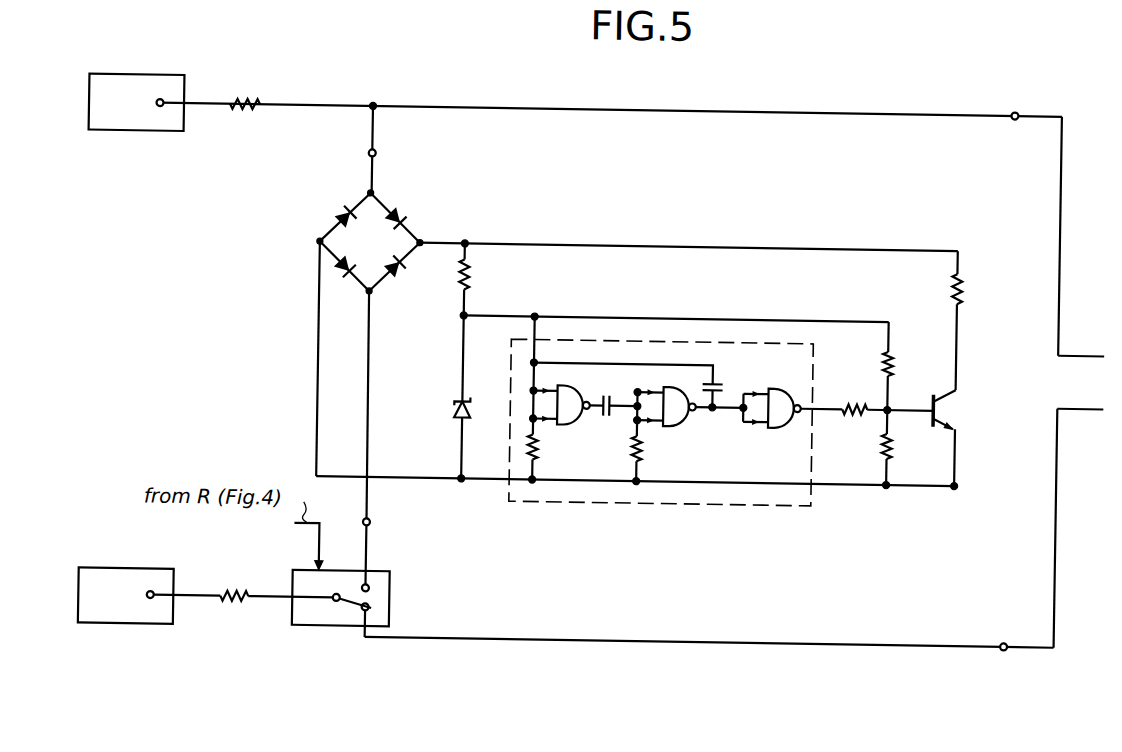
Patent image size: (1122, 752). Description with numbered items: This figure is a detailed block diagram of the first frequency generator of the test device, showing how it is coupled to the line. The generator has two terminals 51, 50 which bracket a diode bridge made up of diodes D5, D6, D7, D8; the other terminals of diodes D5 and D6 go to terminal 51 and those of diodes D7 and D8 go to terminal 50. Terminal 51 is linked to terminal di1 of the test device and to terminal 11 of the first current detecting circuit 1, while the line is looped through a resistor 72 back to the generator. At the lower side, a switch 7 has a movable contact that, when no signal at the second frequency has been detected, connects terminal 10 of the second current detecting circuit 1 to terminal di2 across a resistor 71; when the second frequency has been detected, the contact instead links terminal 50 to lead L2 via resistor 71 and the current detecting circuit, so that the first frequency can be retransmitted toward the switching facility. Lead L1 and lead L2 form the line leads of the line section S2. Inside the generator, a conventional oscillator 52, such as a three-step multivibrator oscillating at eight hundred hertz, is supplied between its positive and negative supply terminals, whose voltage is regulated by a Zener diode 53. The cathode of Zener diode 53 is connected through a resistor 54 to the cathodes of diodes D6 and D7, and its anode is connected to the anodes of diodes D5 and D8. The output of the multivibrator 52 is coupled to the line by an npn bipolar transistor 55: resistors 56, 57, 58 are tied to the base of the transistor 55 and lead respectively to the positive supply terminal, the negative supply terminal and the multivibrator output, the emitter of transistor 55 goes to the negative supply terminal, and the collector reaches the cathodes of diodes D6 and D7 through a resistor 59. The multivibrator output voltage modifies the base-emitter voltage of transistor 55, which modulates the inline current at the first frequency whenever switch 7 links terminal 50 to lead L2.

The current detecting circuit 1 is at (176, 77).
The terminal of current detecting circuit 1_1 11 is at (157, 107).
The terminal of current detecting circuit 1_2 10 is at (154, 599).
The resistor 72 is at (247, 112).
The resistor 71 is at (235, 594).
The terminal of frequency generator 51 is at (377, 153).
The terminal of frequency generator 50 is at (377, 522).
The switch 7 is at (317, 628).
The diode D5 is at (341, 214).
The diode D6 is at (402, 217).
The diode D7 is at (396, 273).
The diode D8 is at (344, 276).
The resistor 54 is at (471, 273).
The Zener diode 53 is at (460, 404).
The oscillator 52 is at (522, 313).
The resistor 58 is at (849, 399).
The resistor 56 is at (897, 364).
The resistor 57 is at (887, 446).
The resistor 59 is at (966, 285).
The npn bipolar transistor 55 is at (945, 409).
The line lead L1 is at (1063, 154).
The line lead L2 is at (1062, 556).
The second line section S2 is at (1080, 383).
The terminal of test device di1 is at (1016, 101).
The terminal of test device di2 is at (1012, 641).